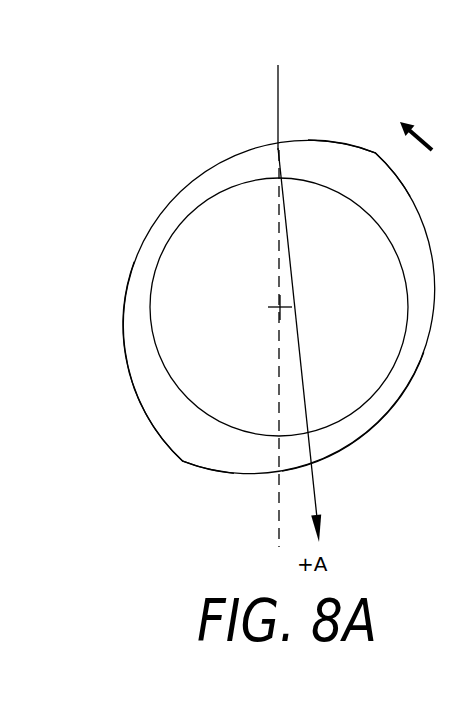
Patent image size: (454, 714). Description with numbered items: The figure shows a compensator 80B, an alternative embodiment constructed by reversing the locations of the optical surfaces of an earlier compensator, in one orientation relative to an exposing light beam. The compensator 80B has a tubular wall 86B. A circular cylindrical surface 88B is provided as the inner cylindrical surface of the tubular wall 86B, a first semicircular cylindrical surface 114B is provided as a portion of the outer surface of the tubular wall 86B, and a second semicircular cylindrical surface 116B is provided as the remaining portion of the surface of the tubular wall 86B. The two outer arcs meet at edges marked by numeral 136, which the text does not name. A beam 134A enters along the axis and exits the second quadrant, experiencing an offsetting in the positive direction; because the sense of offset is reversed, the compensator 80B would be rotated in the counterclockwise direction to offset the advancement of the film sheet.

The compensator 80B is at (120, 263).
The tubular wall 86B is at (124, 311).
The circular cylindrical surface 88B is at (383, 232).
The second semicircular cylindrical surface 116B is at (133, 386).
The first semicircular cylindrical surface 114B is at (356, 436).
The ridge / transition edge 136 is at (374, 151).
The beam 134A is at (280, 103).